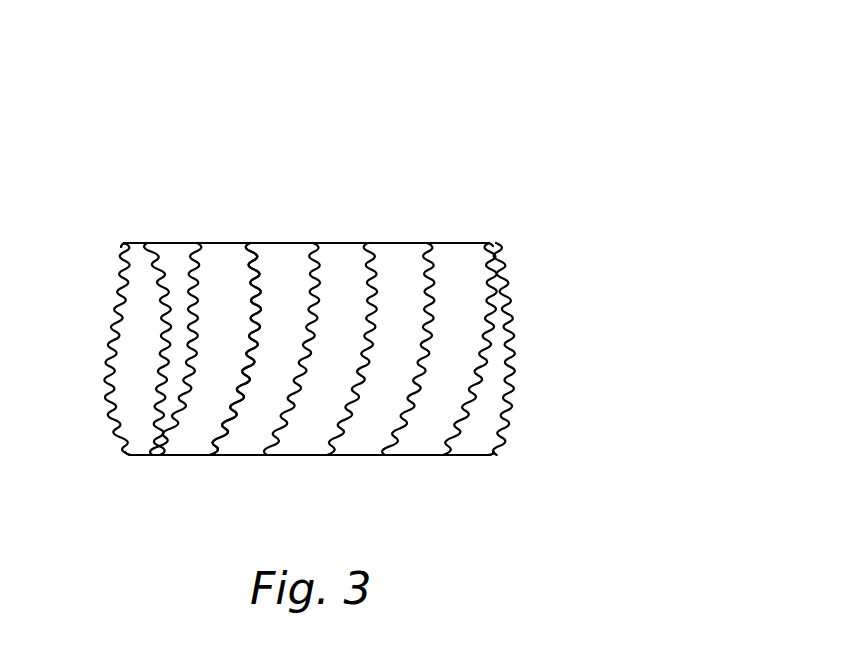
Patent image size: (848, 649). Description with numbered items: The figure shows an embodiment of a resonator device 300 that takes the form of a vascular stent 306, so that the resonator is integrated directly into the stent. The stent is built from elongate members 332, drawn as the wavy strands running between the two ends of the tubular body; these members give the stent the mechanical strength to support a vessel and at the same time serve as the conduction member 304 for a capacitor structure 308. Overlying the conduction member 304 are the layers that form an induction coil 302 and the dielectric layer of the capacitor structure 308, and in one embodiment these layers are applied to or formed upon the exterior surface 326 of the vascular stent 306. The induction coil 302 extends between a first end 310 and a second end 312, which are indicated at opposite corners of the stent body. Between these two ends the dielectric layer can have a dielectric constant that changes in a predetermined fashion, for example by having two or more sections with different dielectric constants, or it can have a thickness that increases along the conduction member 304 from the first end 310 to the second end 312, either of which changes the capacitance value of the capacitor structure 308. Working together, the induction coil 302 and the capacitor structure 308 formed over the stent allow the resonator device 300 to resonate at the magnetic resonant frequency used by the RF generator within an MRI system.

The resonator device 300 is at (93, 74).
The induction coil 302 is at (261, 417).
The conduction member 304 is at (258, 245).
The vascular stent 306 is at (170, 242).
The capacitor structure 308 is at (312, 230).
The first end 310 is at (123, 230).
The second end 312 is at (496, 473).
The exterior surface 326 is at (367, 473).
The elongate members 332 is at (311, 242).